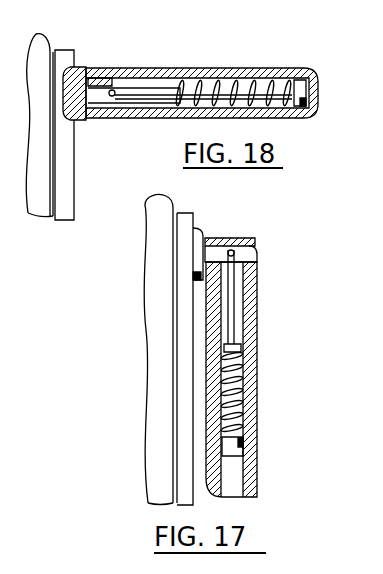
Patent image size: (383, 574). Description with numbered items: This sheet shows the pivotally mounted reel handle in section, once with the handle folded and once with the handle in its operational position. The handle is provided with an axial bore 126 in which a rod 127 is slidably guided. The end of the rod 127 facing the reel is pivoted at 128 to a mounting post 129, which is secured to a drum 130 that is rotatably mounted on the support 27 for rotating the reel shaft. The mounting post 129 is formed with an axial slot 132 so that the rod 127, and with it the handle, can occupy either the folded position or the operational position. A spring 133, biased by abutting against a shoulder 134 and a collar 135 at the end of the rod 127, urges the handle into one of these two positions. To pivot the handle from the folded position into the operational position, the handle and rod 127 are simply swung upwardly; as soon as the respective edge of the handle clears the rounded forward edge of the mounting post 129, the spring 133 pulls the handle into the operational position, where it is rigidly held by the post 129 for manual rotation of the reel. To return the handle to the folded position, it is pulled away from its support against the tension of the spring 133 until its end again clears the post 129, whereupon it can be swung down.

In FIG. 18, the support 27 is at (38, 181).
In FIG. 17, the support 27 is at (162, 380).
In FIG. 18, the axial bore 126 is at (252, 82).
In FIG. 17, the axial bore 126 is at (242, 402).
In FIG. 18, the rod 127 is at (148, 92).
In FIG. 17, the rod 127 is at (233, 318).
In FIG. 18, the pivot 128 is at (119, 80).
In FIG. 17, the pivot 128 is at (237, 239).
In FIG. 18, the mounting post 129 is at (108, 68).
In FIG. 17, the mounting post 129 is at (257, 247).
In FIG. 18, the drum 130 is at (67, 202).
In FIG. 17, the drum 130 is at (184, 214).
In FIG. 18, the axial slot 132 is at (104, 100).
In FIG. 17, the axial slot 132 is at (247, 255).
In FIG. 18, the spring 133 is at (287, 83).
In FIG. 17, the spring 133 is at (238, 422).
In FIG. 18, the shoulder 134 is at (177, 80).
In FIG. 17, the shoulder 134 is at (247, 343).
In FIG. 18, the collar 135 is at (307, 93).
In FIG. 17, the collar 135 is at (233, 447).